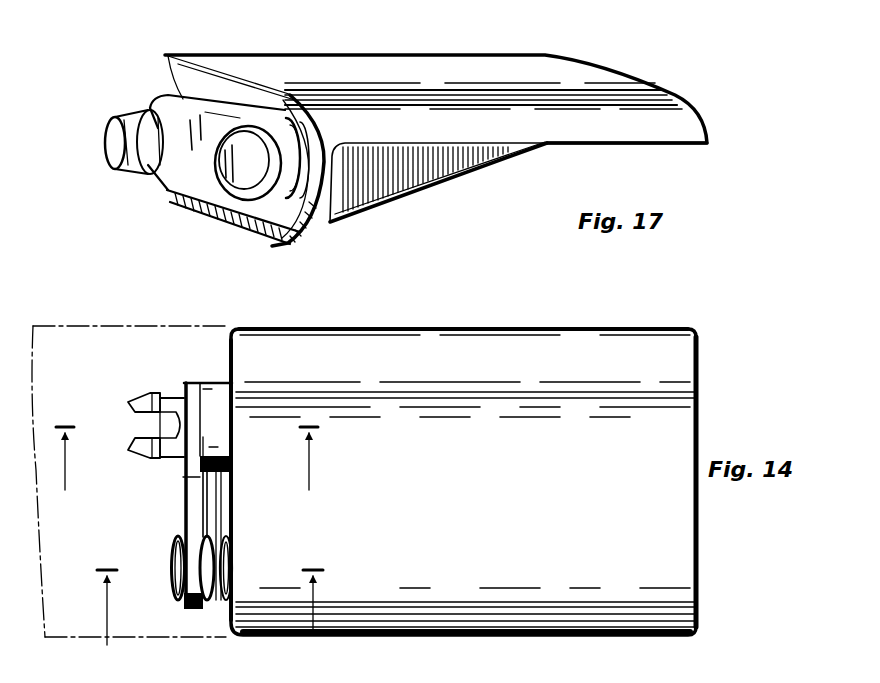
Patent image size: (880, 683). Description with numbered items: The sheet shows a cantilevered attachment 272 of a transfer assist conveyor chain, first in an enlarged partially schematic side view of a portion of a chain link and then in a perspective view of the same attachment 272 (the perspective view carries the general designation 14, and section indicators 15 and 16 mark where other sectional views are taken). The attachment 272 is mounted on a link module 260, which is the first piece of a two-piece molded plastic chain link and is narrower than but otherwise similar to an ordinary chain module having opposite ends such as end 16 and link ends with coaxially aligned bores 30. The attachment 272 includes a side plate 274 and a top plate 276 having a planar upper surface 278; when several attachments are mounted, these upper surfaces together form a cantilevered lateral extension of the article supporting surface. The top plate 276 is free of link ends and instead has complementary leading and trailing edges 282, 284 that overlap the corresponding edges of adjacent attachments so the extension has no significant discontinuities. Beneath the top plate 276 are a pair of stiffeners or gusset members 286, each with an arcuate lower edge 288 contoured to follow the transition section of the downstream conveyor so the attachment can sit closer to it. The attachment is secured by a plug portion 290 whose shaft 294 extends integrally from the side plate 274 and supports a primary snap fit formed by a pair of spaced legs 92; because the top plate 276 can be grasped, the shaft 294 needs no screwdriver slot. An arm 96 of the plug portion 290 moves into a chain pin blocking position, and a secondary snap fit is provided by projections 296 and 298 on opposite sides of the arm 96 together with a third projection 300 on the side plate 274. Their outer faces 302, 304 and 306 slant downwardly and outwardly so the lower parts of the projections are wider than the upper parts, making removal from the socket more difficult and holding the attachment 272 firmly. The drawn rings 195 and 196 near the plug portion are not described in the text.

In FIG. 17, the housing assembly 14 is at (172, 58).
In FIG. 14, the section line 15 is at (187, 469).
In FIG. 14, the opposite end 16 is at (208, 623).
In FIG. 17, the bore 30 is at (224, 169).
In FIG. 17, the legs 92 is at (105, 132).
In FIG. 14, the legs 92 is at (138, 446).
In FIG. 17, the arm 96 is at (182, 178).
In FIG. 14, the arm 96 is at (184, 477).
In FIG. 17, the shaft 195 is at (264, 226).
In FIG. 14, the shaft 195 is at (170, 523).
In FIG. 17, the collar 196 is at (240, 192).
In FIG. 14, the link module 260 is at (135, 326).
In FIG. 17, the attachment 272 is at (612, 46).
In FIG. 14, the attachment 272 is at (493, 329).
In FIG. 17, the side plate 274 is at (292, 244).
In FIG. 17, the top plate 276 is at (620, 82).
In FIG. 14, the top plate 276 is at (698, 395).
In FIG. 17, the planar upper surface 278 is at (426, 55).
In FIG. 14, the planar upper surface 278 is at (533, 481).
In FIG. 17, the leading edge 282 is at (597, 125).
In FIG. 14, the leading edge 282 is at (397, 636).
In FIG. 14, the trailing edge 284 is at (392, 329).
In FIG. 17, the gusset member 286 is at (418, 184).
In FIG. 17, the arcuate lower edge 288 is at (367, 200).
In FIG. 17, the plug portion 290 is at (112, 100).
In FIG. 14, the plug portion 290 is at (152, 385).
In FIG. 14, the shaft 294 is at (210, 420).
In FIG. 14, the projection 296 is at (173, 552).
In FIG. 14, the projection 298 is at (204, 610).
In FIG. 17, the third projection 300 is at (304, 155).
In FIG. 14, the third projection 300 is at (219, 606).
In FIG. 14, the outer face 302 is at (173, 568).
In FIG. 14, the outer face 304 is at (209, 543).
In FIG. 17, the outer face 306 is at (287, 128).
In FIG. 14, the outer face 306 is at (230, 560).